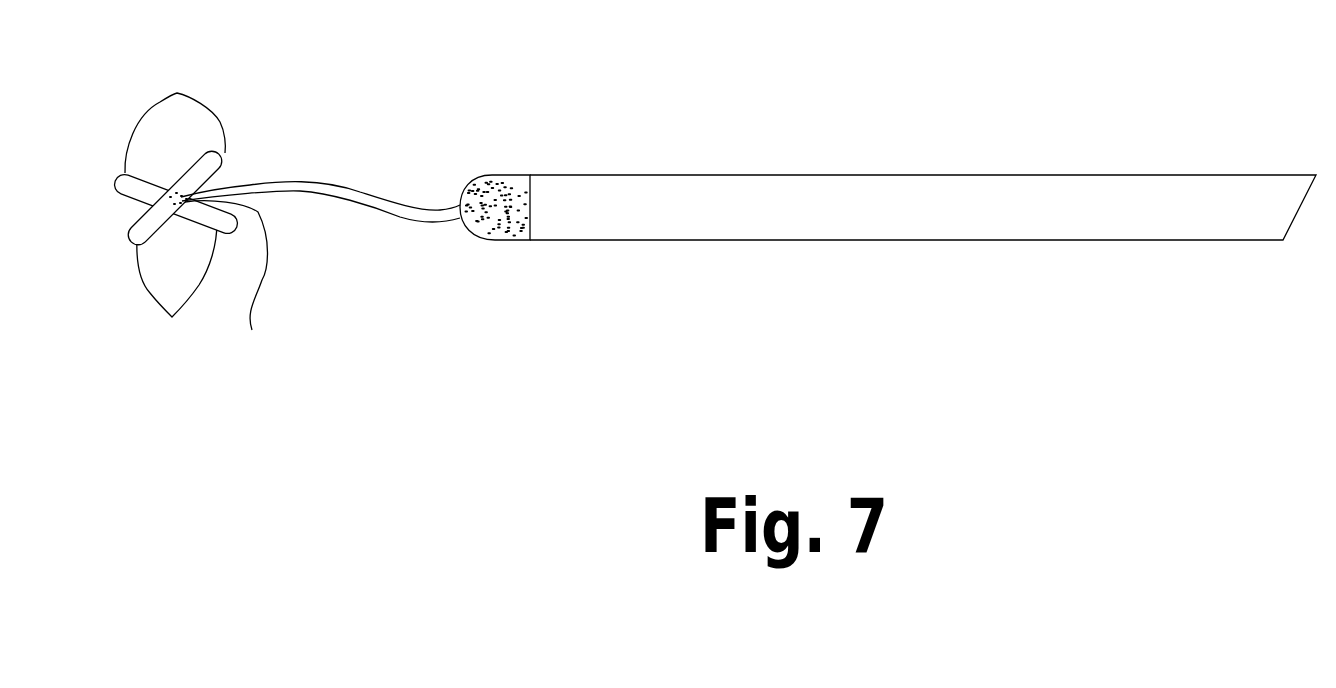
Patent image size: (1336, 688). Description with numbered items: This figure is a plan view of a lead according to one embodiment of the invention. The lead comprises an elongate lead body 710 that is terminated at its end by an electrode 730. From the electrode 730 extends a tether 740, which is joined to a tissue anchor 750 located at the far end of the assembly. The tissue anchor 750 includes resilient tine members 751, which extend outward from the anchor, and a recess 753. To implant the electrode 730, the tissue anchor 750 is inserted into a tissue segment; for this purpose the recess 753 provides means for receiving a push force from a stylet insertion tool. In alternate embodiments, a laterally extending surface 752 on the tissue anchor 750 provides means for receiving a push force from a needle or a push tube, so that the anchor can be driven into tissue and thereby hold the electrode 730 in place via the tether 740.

The lead body 710 is at (790, 222).
The electrode 730 is at (497, 232).
The tether 740 is at (353, 201).
The tissue anchor 750 is at (107, 277).
The resilient tine members 751 is at (175, 208).
The laterally extending surface 752 is at (215, 181).
The recess 753 is at (230, 284).